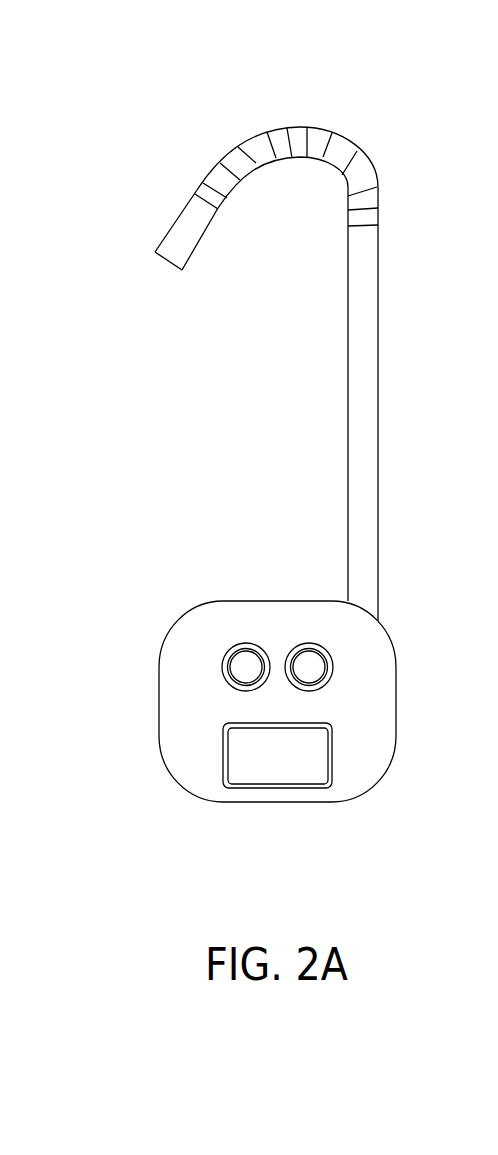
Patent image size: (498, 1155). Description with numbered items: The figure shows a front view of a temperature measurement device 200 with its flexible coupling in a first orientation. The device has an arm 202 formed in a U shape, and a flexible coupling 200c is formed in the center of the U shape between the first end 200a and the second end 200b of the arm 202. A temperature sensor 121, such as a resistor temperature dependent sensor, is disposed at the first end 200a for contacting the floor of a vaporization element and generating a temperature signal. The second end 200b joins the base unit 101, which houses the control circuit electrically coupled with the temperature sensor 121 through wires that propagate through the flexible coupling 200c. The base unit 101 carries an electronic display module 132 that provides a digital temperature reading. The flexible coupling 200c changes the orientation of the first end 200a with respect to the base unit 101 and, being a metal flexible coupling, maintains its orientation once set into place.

The temperature measurement device 200 is at (262, 377).
The first end 200a is at (174, 240).
The second end 200b is at (356, 587).
The flexible coupling 200c is at (343, 143).
The arm 202 is at (366, 365).
The temperature sensor 121 is at (147, 277).
The base unit 101 is at (232, 768).
The electronic display module 132 is at (295, 773).